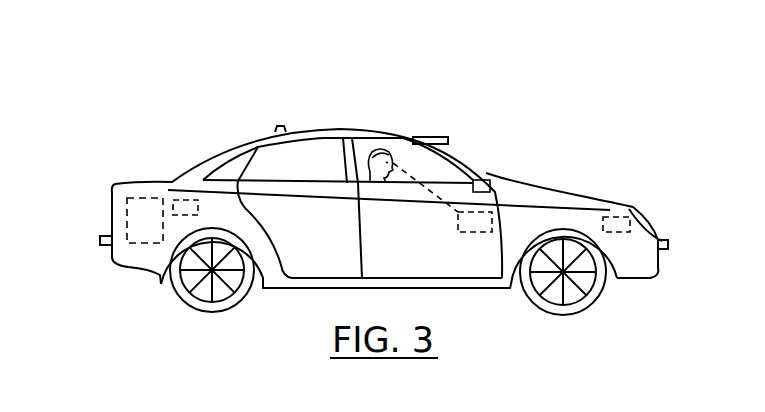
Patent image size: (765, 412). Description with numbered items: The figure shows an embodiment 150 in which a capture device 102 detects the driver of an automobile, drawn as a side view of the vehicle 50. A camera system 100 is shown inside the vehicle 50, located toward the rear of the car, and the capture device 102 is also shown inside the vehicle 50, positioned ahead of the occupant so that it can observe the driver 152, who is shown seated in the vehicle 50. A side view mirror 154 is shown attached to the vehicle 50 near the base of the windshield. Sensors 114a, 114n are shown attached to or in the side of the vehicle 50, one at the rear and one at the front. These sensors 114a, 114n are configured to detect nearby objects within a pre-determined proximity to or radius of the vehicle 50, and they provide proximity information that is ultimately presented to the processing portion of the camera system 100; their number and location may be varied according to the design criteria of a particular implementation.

The embodiment 150 is at (185, 68).
The vehicle 50 is at (242, 142).
The camera system 100 is at (127, 221).
The sensor 114a is at (178, 200).
The sensor 114n is at (620, 216).
The driver 152 is at (383, 146).
The side view mirror 154 is at (483, 180).
The capture device 102 is at (478, 233).